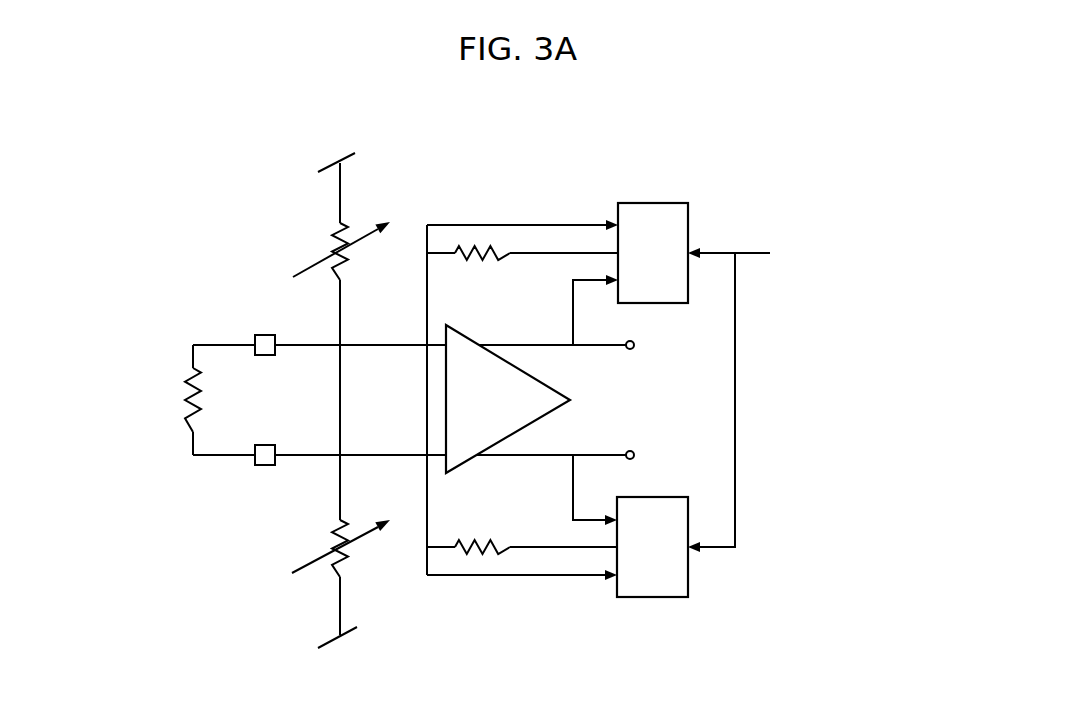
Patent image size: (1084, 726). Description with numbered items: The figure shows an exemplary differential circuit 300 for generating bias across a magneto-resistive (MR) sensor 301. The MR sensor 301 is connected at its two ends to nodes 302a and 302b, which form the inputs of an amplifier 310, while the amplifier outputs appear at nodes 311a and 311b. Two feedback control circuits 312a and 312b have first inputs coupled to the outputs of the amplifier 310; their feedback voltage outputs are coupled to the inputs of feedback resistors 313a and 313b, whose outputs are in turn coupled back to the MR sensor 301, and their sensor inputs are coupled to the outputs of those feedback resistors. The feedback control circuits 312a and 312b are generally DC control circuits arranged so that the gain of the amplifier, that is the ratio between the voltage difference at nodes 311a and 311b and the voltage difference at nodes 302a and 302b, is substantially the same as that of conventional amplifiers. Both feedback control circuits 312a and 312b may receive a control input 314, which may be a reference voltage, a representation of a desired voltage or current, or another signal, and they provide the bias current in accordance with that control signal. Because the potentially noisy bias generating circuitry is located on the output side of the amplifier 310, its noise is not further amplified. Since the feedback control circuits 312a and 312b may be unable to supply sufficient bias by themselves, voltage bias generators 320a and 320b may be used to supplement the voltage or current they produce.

The differential circuit 300 is at (735, 128).
The magneto-resistive (MR) sensor 301 is at (172, 381).
The node 302a is at (265, 357).
The node 302b is at (265, 443).
The amplifier 310 is at (548, 388).
The node 311a is at (659, 345).
The node 311b is at (660, 455).
The feedback control circuit 312a is at (698, 213).
The feedback control circuit 312b is at (693, 580).
The feedback resistor 313a is at (485, 272).
The feedback resistor 313b is at (480, 531).
The control input 314 is at (750, 258).
The voltage bias generator 320a is at (347, 222).
The voltage bias generator 320b is at (348, 583).